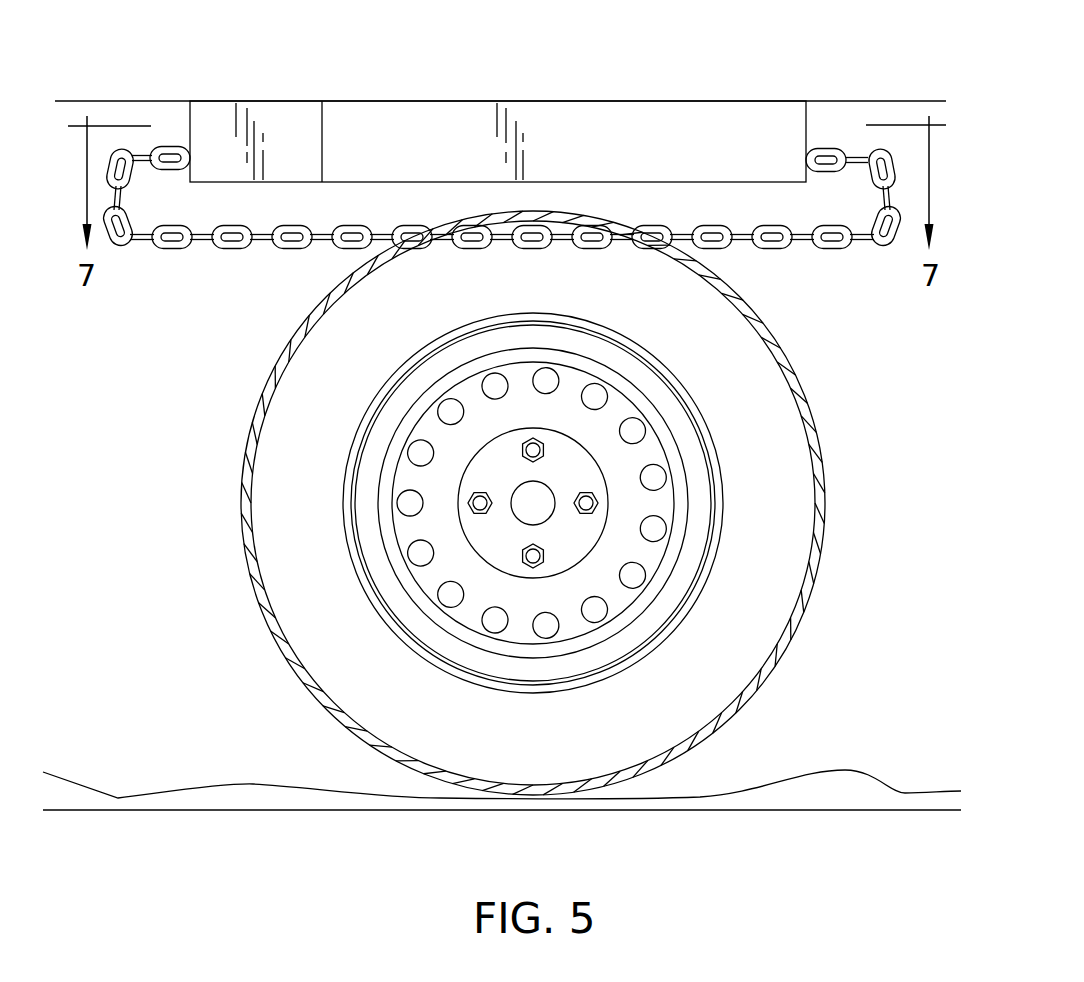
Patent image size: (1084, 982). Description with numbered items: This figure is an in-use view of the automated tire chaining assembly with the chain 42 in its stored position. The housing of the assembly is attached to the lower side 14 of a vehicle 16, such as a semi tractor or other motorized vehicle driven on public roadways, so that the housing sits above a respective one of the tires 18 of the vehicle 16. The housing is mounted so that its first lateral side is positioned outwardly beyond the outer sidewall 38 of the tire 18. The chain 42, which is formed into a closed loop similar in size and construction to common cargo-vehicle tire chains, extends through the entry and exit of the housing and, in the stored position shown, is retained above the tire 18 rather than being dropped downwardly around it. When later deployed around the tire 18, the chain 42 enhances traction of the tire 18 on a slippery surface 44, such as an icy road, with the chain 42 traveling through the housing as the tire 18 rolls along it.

The lower side 14 is at (74, 100).
The vehicle 16 is at (62, 150).
The tire 18 is at (257, 605).
The outer sidewall 38 is at (352, 653).
The chain 42 is at (240, 250).
The slippery surface 44 is at (135, 810).